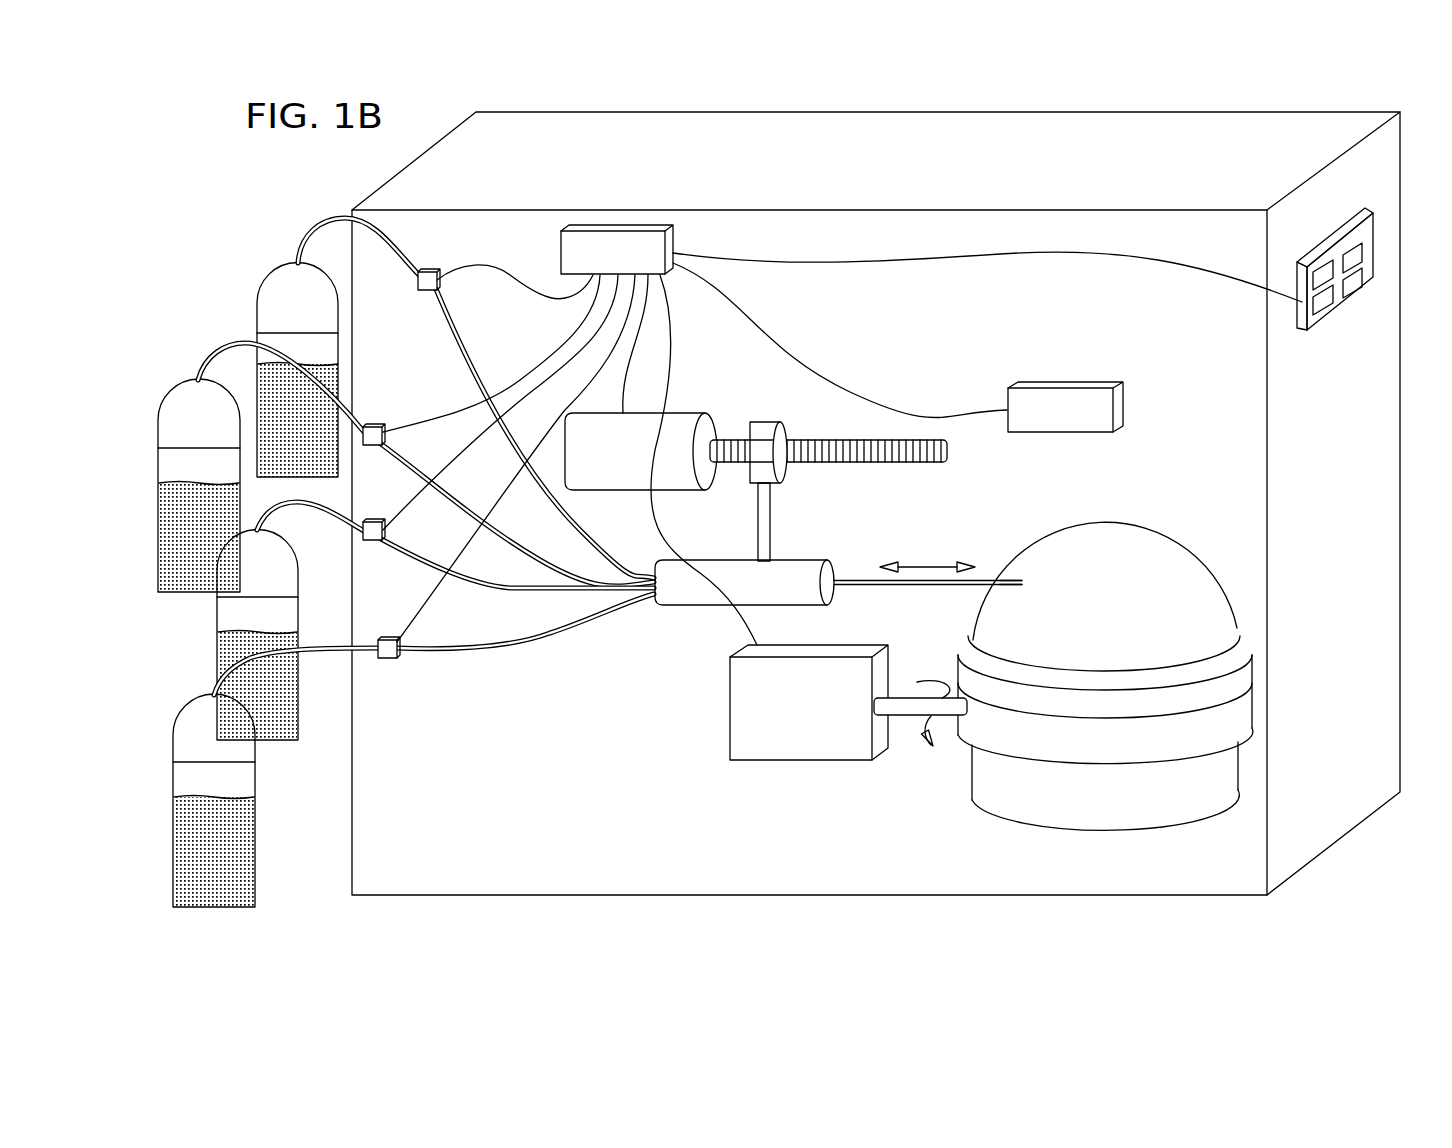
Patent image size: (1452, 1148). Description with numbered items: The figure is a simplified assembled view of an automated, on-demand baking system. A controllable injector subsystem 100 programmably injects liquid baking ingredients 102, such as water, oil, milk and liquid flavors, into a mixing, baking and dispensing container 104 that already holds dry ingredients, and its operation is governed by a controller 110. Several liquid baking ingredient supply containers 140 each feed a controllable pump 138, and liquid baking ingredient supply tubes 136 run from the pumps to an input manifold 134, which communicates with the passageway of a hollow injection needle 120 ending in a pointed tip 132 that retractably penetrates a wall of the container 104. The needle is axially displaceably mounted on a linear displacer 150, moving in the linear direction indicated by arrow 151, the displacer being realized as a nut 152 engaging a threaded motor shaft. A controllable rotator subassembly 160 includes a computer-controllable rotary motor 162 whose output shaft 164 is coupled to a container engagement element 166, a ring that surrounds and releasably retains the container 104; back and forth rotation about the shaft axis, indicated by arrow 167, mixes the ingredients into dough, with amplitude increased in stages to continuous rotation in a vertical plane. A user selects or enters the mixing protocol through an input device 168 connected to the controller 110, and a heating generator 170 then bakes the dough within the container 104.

The controllable injector subsystem 100 is at (852, 427).
The liquid baking ingredients 102 is at (330, 380).
The mixing, baking and dispensing container 104 is at (1173, 563).
The controller 110 is at (610, 247).
The injection needle 120 is at (1022, 582).
The pointed tip 132 is at (1022, 582).
The input manifold 134 is at (695, 603).
The liquid baking ingredient supply tubes 136 is at (586, 574).
The controllable pump 138 is at (458, 348).
The liquid baking ingredient supply container 140 is at (190, 380).
The linear displacer 150 is at (688, 423).
The arrow 151 is at (920, 566).
The nut 152 is at (764, 426).
The controllable rotator subassembly 160 is at (800, 724).
The computer-controllable rotary motor 162 is at (737, 707).
The output shaft 164 is at (907, 717).
The container engagement element 166 is at (1247, 709).
The arrow 167 is at (914, 681).
The input device 168 is at (1373, 247).
The heating generator 170 is at (1072, 386).